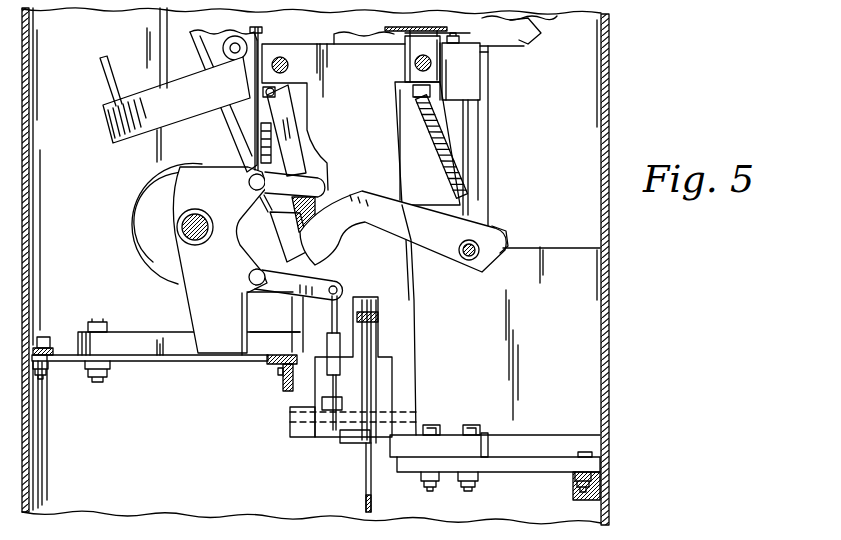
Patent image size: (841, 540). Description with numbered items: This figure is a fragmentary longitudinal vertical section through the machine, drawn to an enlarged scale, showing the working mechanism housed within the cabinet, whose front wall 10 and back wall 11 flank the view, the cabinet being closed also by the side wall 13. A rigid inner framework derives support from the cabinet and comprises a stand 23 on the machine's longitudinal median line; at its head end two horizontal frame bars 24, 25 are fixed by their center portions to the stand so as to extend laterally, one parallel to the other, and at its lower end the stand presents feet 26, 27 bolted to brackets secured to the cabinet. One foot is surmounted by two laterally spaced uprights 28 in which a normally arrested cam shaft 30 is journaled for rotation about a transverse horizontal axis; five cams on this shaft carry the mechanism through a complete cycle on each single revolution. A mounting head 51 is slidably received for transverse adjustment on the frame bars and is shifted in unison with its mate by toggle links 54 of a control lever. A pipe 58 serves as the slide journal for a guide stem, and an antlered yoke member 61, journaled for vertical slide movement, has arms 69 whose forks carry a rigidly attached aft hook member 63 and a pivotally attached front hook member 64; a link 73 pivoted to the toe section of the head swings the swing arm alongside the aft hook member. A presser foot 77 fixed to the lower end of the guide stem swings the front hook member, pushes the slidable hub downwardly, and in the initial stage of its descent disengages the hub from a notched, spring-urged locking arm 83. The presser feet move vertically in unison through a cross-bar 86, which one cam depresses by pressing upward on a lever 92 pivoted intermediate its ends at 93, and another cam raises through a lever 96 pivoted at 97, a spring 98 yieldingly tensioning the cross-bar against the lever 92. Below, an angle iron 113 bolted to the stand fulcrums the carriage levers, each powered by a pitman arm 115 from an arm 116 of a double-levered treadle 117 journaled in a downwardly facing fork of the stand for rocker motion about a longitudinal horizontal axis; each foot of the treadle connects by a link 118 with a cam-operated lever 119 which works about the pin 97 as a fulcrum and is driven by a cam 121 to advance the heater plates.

The front wall 10 is at (610, 140).
The back wall 11 is at (26, 266).
The side wall 13 is at (173, 504).
The stand 23 is at (407, 305).
The horizontal bar 24 is at (415, 63).
The horizontal bar 25 is at (289, 65).
The foot 26 is at (488, 441).
The foot 27 is at (144, 352).
The uprights 28 is at (198, 305).
The cam shaft 30 is at (198, 240).
The mounting head 51 is at (470, 75).
The toggle links 54 is at (413, 27).
The pipe 58 is at (470, 158).
The antlered member 61 is at (290, 225).
The aft hook member 63 is at (204, 47).
The front hook member 64 is at (520, 42).
The yoke arms 69 is at (239, 136).
The link 73 is at (115, 78).
The presser foot 77 is at (402, 175).
The locking arm 83 is at (283, 120).
The cross-bar 86 is at (467, 260).
The lever 92 is at (503, 232).
The pivot 93 is at (250, 186).
The lever 96 is at (356, 203).
The pivot pin 97 is at (258, 287).
The spring 98 is at (438, 152).
The angle iron 113 is at (270, 360).
The pitman arm 115 is at (365, 396).
The arm 116 is at (376, 483).
The double-levered treadle 117 is at (355, 443).
The link 118 is at (332, 320).
The cam-operated lever 119 is at (318, 283).
The cam 121 is at (157, 187).